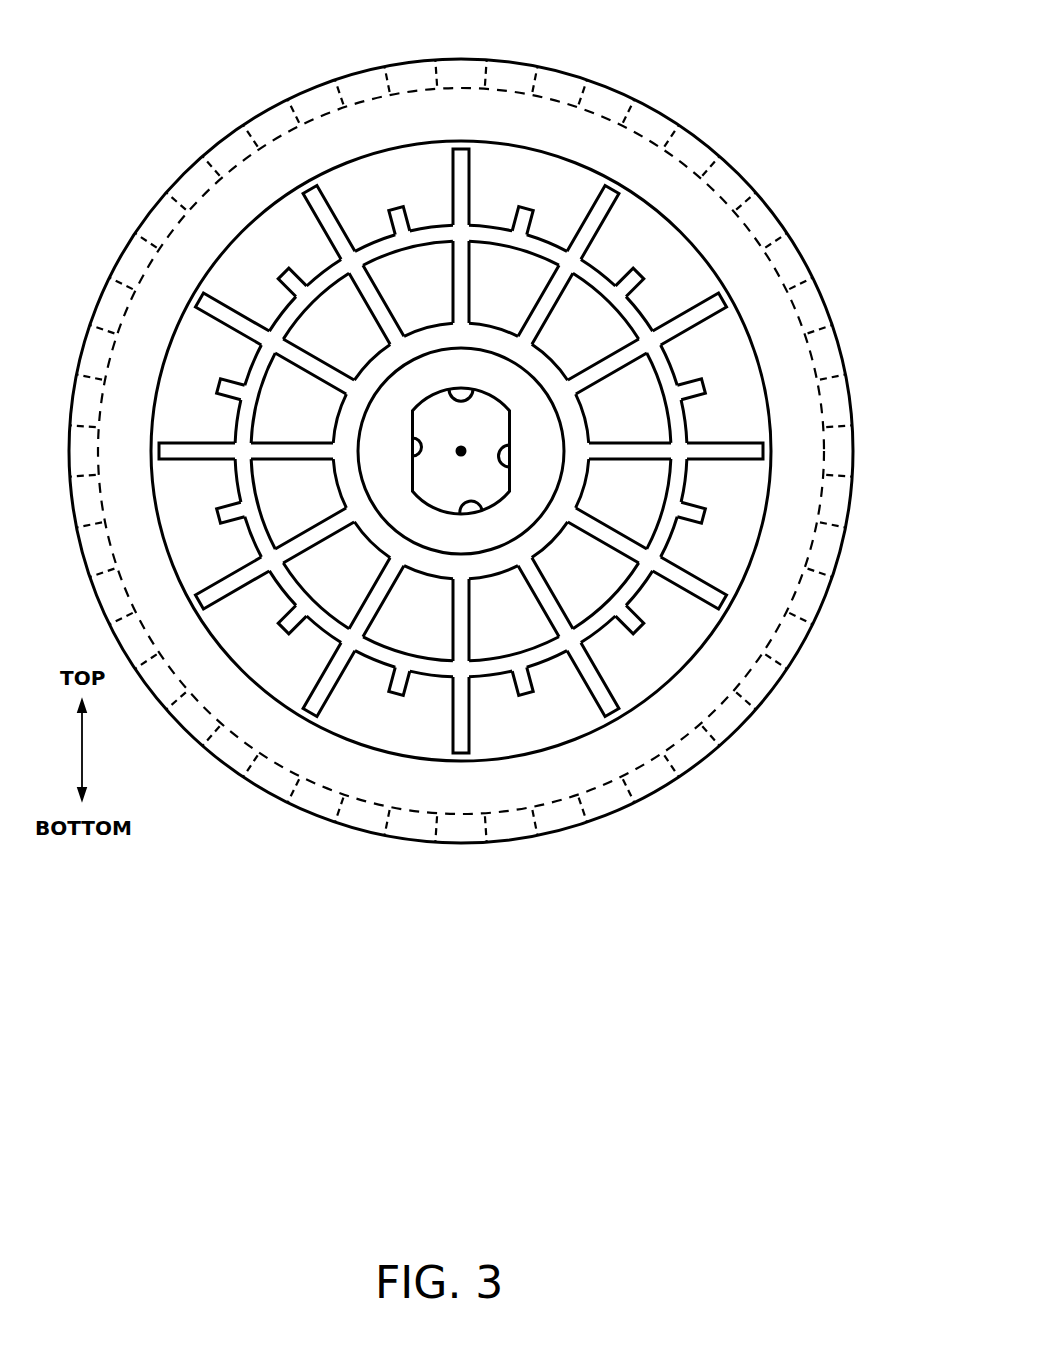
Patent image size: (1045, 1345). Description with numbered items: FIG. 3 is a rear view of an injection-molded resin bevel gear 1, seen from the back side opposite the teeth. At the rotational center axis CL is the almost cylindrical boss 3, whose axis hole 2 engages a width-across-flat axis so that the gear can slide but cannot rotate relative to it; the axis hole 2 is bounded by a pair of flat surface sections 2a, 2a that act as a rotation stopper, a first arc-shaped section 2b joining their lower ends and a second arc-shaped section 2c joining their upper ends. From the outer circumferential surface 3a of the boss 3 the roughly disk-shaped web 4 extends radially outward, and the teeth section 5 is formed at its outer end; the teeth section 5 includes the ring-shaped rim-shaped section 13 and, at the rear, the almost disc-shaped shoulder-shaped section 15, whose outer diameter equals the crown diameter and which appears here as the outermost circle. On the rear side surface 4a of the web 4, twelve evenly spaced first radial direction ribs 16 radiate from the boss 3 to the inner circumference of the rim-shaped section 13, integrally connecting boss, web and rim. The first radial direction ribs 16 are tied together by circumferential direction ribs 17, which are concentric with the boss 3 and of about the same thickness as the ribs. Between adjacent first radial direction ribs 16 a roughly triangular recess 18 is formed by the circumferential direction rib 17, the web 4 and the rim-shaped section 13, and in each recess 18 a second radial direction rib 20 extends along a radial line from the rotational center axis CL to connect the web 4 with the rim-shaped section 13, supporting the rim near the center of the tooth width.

The injection-molded resin bevel gear 1 is at (747, 142).
The axis hole 2 is at (432, 497).
The flat surface sections 2a is at (417, 452).
The first arc-shaped section 2b is at (485, 513).
The second arc-shaped section 2c is at (466, 398).
The boss 3 is at (387, 532).
The outer circumferential surface 3a is at (567, 413).
The web 4 is at (283, 482).
The side surface 4a is at (683, 471).
The teeth section 5 is at (817, 273).
The rim-shaped section 13 is at (250, 255).
The shoulder-shaped section 15 is at (838, 357).
The first radial direction ribs 16 is at (457, 147).
The circumferential direction ribs 17 is at (495, 237).
The recess 18 is at (565, 220).
The second radial direction ribs 20 is at (528, 200).
The rotational center axis CL is at (461, 451).